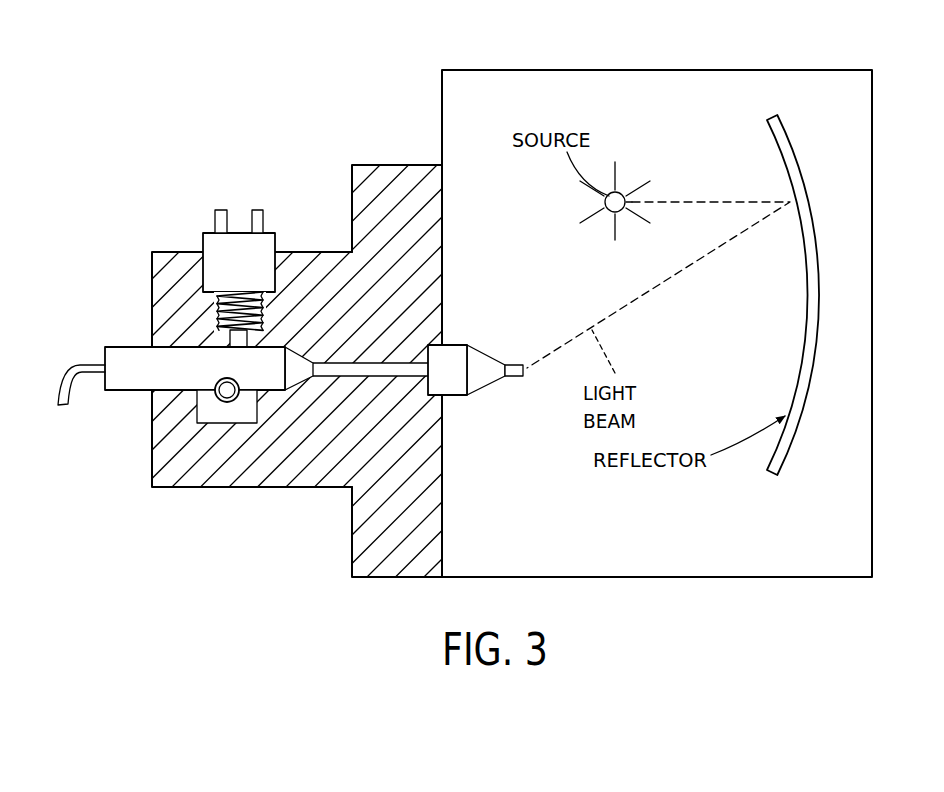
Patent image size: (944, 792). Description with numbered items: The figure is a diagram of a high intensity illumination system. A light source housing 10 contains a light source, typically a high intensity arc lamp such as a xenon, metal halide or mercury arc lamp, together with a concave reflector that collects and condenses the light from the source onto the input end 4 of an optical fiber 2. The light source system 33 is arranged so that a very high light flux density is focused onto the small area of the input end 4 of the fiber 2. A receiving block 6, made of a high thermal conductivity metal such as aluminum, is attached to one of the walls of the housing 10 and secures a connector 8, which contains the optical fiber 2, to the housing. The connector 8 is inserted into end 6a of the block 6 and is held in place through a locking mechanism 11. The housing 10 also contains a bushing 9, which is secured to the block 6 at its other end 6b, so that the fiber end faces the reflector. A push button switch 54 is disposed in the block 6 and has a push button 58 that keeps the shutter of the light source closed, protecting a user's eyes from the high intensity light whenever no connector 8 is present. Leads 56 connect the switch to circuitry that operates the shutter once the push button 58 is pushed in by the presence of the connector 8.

The light source housing 10 is at (415, 72).
The receiving block 6 is at (418, 325).
The end of block 6a is at (187, 231).
The end of block 6b is at (406, 146).
The push button switch 54 is at (233, 236).
The leads 56 is at (221, 210).
The push button 58 is at (236, 338).
The connector 8 is at (132, 378).
The optical fiber 2 is at (93, 362).
The locking mechanism 11 is at (215, 413).
The bushing 9 is at (449, 353).
The input end 4 is at (516, 390).
The light source system 33 is at (683, 392).